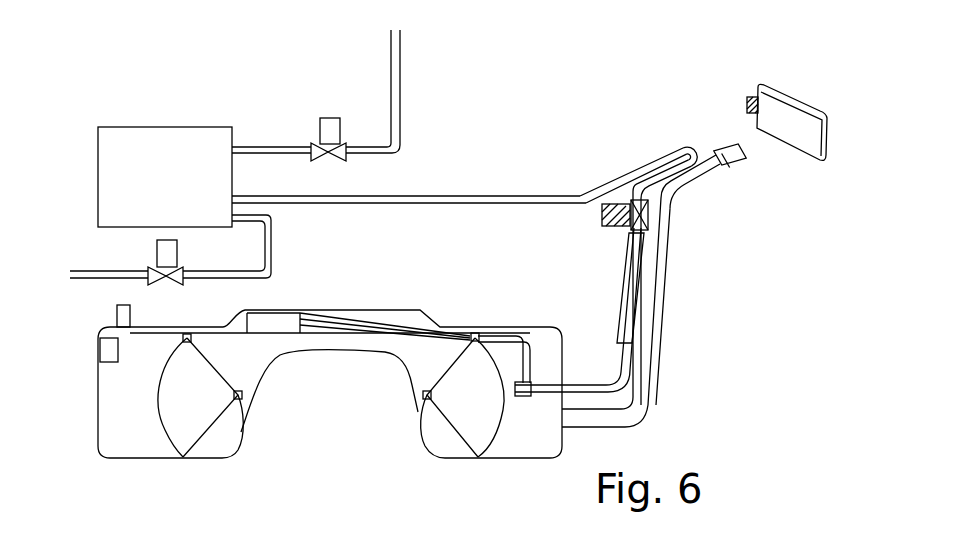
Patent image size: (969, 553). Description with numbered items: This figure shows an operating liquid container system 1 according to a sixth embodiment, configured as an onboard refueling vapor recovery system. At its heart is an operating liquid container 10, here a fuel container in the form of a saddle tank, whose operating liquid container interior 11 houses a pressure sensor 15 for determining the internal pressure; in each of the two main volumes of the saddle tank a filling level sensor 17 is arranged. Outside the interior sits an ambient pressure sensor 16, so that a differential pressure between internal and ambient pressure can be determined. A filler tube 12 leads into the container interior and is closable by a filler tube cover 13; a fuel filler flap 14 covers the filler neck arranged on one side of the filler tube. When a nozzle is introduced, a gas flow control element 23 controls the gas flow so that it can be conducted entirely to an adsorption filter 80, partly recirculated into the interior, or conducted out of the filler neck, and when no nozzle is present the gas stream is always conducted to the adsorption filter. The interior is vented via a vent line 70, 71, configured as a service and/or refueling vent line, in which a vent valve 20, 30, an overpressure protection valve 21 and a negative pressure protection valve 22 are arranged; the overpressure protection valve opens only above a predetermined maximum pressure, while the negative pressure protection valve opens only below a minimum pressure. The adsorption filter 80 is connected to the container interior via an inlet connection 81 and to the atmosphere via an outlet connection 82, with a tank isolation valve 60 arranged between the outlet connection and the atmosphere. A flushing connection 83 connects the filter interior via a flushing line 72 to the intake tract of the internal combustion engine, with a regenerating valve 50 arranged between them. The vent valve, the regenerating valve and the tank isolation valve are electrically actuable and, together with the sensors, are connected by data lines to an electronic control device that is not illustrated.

The operating liquid container system 1 is at (68, 38).
The operating liquid container 10 is at (291, 416).
The operating liquid container interior 11 is at (108, 401).
The filler tube 12 is at (647, 368).
The filler tube cover 13 is at (742, 148).
The fuel filler flap 14 is at (795, 122).
The pressure sensor 15 is at (100, 348).
The ambient pressure sensor 16 is at (117, 317).
The filling level sensors 17 is at (241, 432).
The vent valve 20 is at (672, 284).
The overpressure protection valve 21 is at (627, 200).
The negative pressure protection valve 22 is at (616, 140).
The gas flow control element 23 is at (697, 157).
The service and/or refueling vent valve 30 is at (660, 220).
The regenerating valve 50 is at (147, 272).
The tank isolation valve 60 is at (316, 143).
The vent line 70 is at (568, 302).
The vent line 71 is at (630, 288).
The flushing line 72 is at (82, 271).
The adsorption filter 80 is at (165, 147).
The inlet connection 81 is at (238, 196).
The outlet connection 82 is at (245, 147).
The flushing connection 83 is at (237, 225).